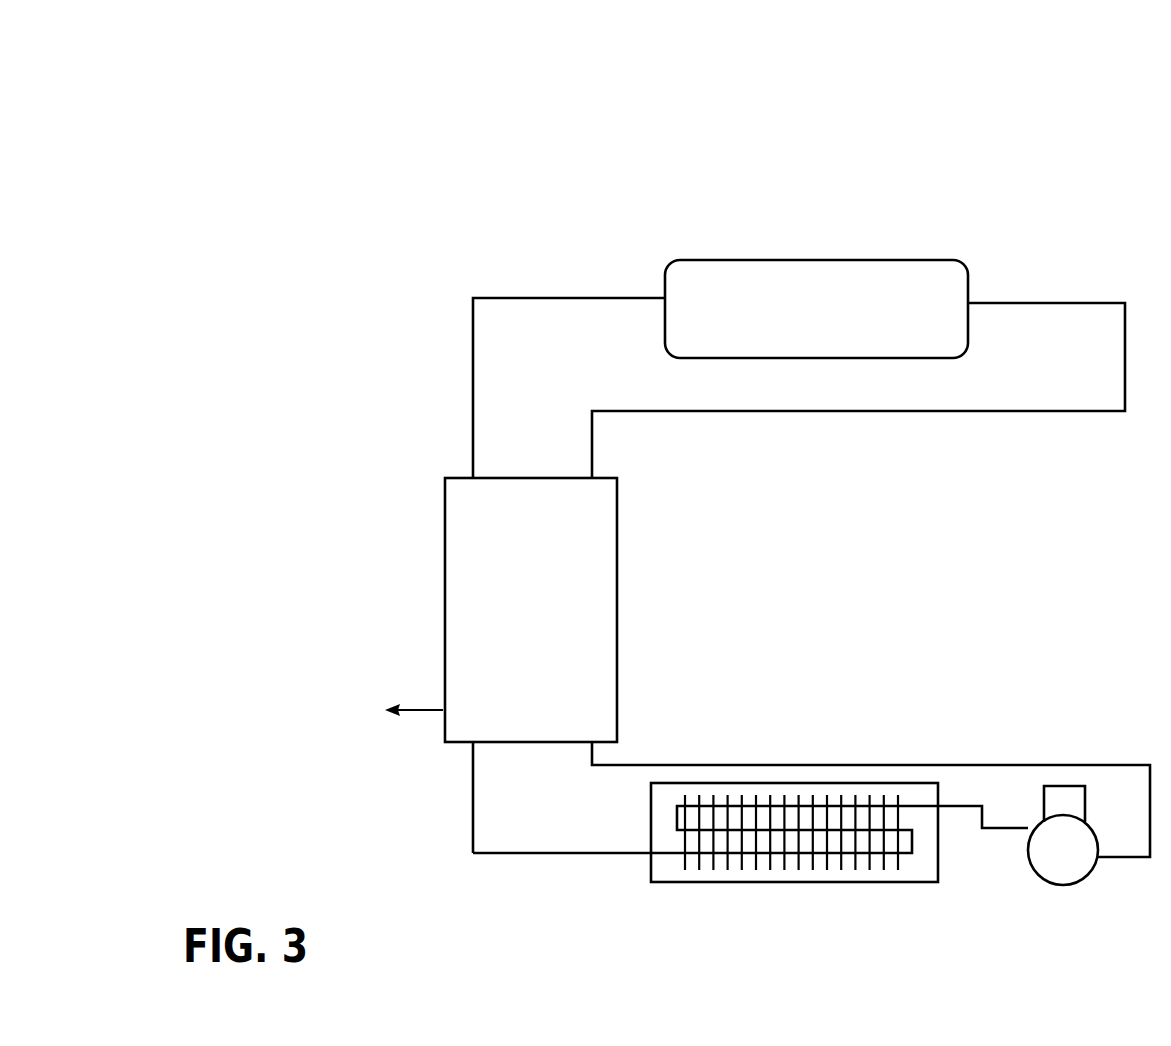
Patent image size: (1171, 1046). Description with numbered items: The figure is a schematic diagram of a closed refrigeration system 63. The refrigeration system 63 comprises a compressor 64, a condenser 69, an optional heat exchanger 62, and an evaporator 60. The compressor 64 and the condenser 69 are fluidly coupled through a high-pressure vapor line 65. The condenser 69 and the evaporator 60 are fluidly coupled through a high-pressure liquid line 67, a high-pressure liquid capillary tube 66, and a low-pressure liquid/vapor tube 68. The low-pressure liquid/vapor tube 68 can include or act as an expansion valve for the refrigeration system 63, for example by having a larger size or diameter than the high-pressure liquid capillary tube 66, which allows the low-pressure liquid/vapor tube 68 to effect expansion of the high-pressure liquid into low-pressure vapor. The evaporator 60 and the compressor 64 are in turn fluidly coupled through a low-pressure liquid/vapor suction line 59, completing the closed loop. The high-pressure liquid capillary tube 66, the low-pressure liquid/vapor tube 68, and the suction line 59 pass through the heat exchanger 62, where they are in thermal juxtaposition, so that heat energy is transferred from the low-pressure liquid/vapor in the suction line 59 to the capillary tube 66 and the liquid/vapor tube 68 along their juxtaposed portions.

The refrigeration system 63 is at (628, 155).
The evaporator 60 is at (868, 280).
The low-pressure liquid/vapor tube 68 is at (473, 410).
The low-pressure liquid/vapor suction line 59 is at (955, 412).
The heat exchanger 62 is at (443, 562).
The high-pressure liquid capillary tube 66 is at (470, 787).
The high-pressure liquid line 67 is at (592, 853).
The condenser 69 is at (800, 883).
The high-pressure vapor line 65 is at (992, 830).
The compressor 64 is at (1087, 877).